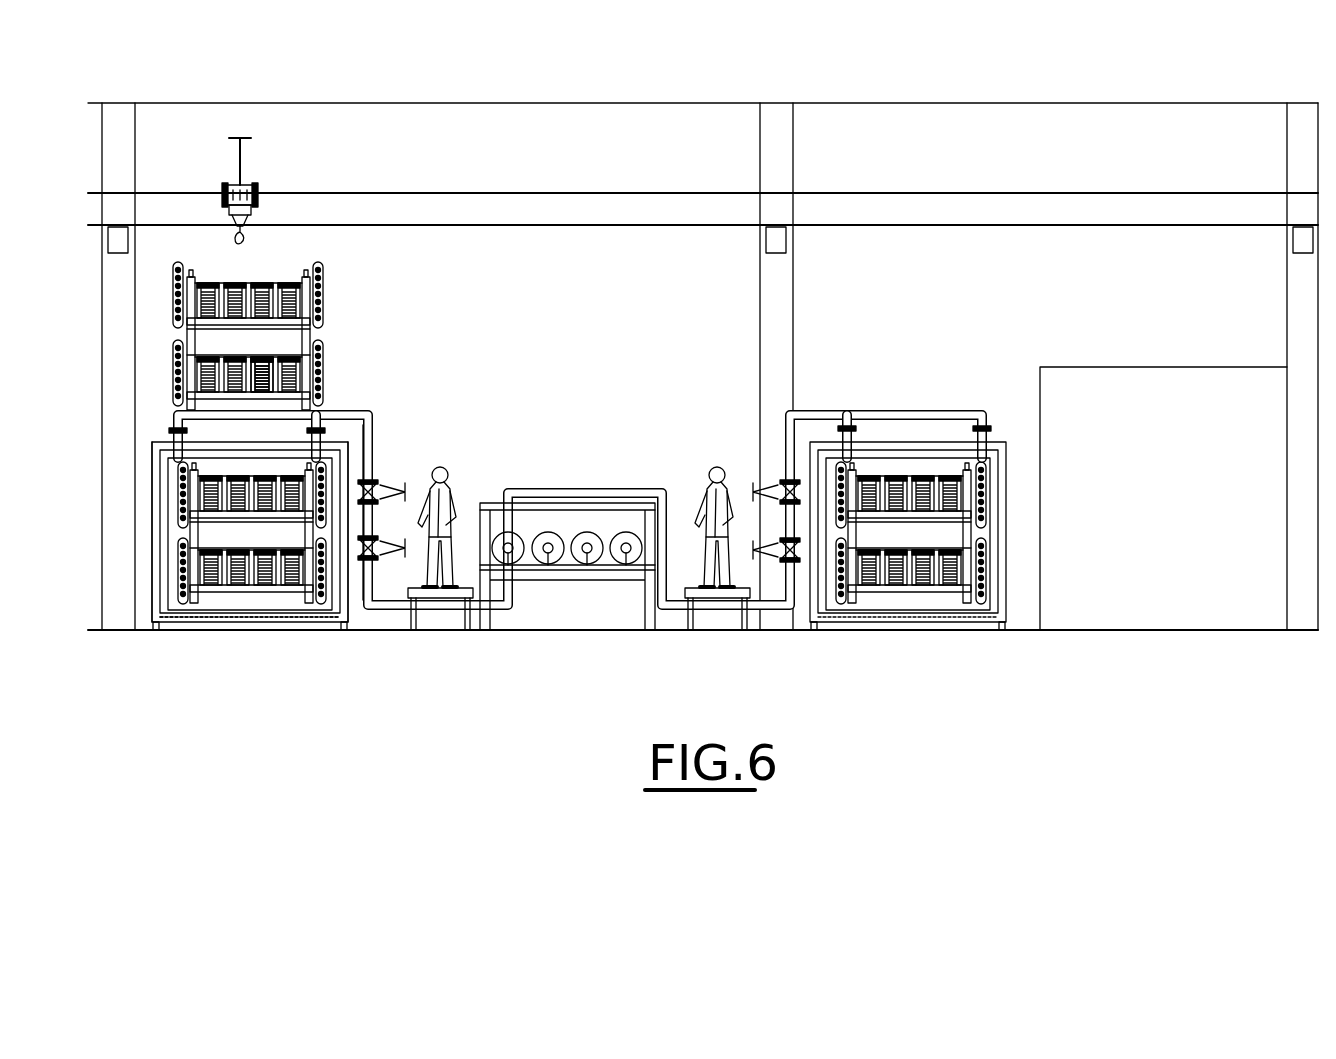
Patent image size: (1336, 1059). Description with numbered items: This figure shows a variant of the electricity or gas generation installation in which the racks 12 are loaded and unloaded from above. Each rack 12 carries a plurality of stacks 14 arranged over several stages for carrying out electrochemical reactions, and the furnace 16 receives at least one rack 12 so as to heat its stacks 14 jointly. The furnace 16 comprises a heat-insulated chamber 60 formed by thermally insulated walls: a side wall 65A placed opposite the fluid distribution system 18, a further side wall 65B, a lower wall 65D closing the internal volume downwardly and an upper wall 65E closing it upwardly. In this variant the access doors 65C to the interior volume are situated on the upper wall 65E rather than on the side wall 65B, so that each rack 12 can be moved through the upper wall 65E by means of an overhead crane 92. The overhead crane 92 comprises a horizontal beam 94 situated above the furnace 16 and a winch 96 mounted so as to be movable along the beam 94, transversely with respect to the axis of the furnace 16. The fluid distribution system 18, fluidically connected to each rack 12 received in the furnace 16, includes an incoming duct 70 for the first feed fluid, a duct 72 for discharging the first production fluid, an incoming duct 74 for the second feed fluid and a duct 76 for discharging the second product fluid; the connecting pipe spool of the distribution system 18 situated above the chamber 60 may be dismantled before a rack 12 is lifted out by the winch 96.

The rack 12 is at (158, 341).
The stack 14 is at (232, 283).
The furnace 16 is at (138, 500).
The fluid distribution system 18 is at (595, 486).
The heat-insulated chamber 60 is at (345, 612).
The side wall 65A is at (352, 605).
The side wall 65B is at (150, 537).
The access door 65C is at (287, 447).
The lower wall 65D is at (243, 625).
The upper wall 65E is at (352, 447).
The incoming duct for the first feed fluid 70 is at (587, 532).
The duct for discharging the first production fluid 72 is at (508, 532).
The incoming duct for the second feed fluid 74 is at (548, 532).
The duct for discharging the second product fluid 76 is at (628, 532).
The overhead crane 92 is at (438, 178).
The horizontal beam 94 is at (603, 210).
The winch 96 is at (260, 190).